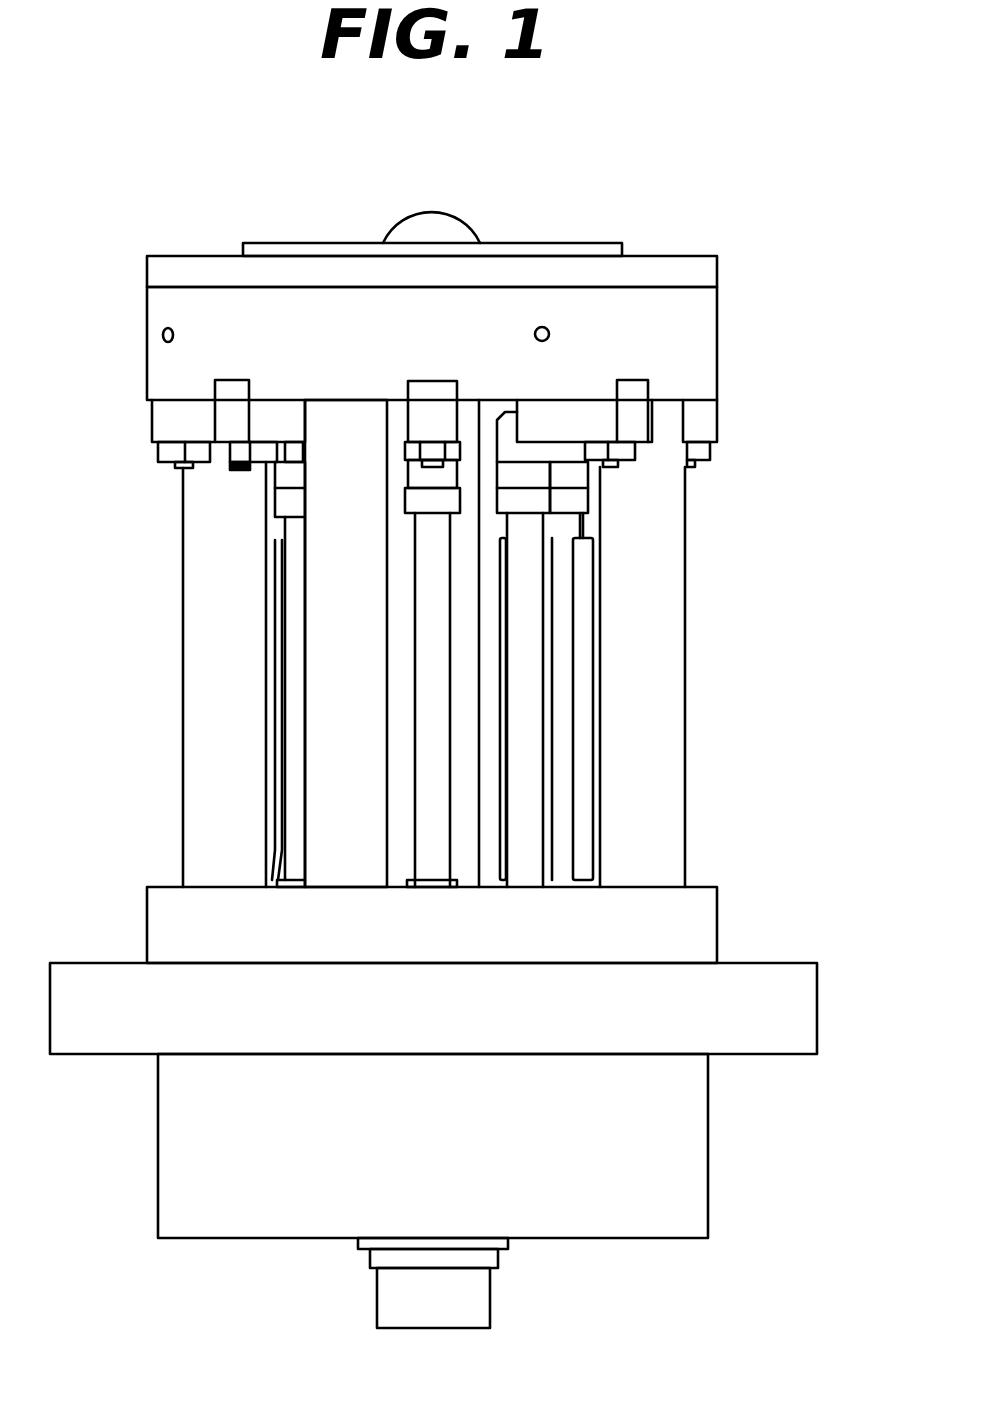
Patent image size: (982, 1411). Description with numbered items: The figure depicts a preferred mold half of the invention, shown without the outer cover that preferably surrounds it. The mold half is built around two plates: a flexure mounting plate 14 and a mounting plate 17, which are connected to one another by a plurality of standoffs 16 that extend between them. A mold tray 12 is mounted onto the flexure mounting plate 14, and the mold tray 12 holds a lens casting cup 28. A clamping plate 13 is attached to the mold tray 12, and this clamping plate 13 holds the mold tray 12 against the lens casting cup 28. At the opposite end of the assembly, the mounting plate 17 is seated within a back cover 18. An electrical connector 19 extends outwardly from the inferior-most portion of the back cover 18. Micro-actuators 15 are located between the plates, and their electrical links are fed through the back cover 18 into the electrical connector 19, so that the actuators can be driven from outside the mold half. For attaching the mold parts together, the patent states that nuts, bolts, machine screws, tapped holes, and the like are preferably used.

The mold tray 12 is at (622, 252).
The lens casting cup 28 is at (435, 212).
The clamping plate 13 is at (717, 272).
The flexure mounting plate 14 is at (717, 343).
The micro-actuators 15 is at (432, 656).
The standoffs 16 is at (343, 705).
The mounting plate 17 is at (717, 930).
The back cover 18 is at (708, 1140).
The electrical connector 19 is at (485, 1256).